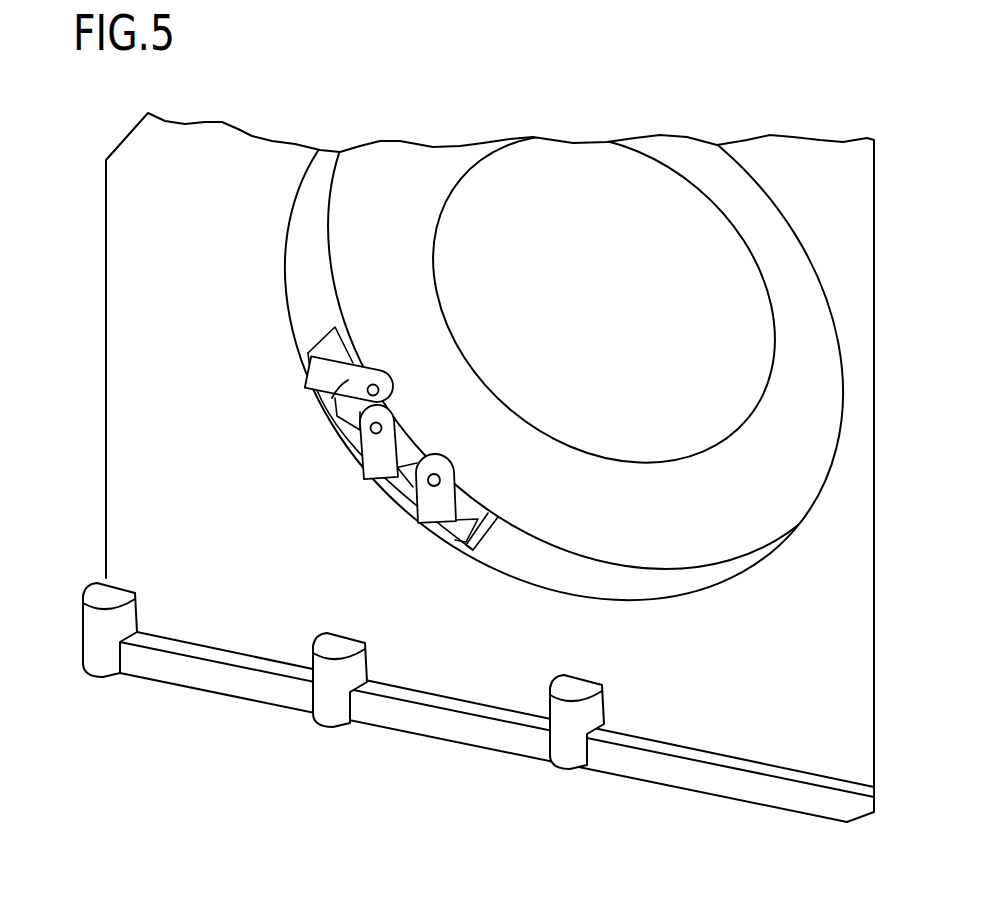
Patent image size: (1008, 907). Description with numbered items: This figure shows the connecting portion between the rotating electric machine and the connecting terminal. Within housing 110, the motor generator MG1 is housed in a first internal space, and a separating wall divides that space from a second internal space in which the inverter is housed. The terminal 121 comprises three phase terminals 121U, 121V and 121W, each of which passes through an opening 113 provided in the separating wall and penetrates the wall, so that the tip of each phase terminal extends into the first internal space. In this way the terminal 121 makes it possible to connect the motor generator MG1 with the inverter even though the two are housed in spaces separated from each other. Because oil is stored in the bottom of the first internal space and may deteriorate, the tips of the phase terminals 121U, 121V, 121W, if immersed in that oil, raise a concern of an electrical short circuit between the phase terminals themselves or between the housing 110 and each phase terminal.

The housing 110 is at (158, 414).
The motor generator MG1 is at (727, 172).
The opening 113 is at (487, 505).
The terminal 121 is at (367, 614).
The phase terminal 121U is at (345, 383).
The phase terminal 121V is at (380, 452).
The phase terminal 121W is at (435, 507).